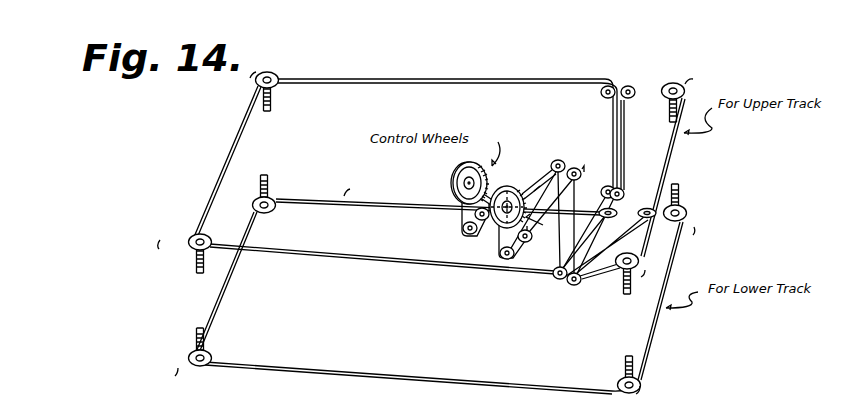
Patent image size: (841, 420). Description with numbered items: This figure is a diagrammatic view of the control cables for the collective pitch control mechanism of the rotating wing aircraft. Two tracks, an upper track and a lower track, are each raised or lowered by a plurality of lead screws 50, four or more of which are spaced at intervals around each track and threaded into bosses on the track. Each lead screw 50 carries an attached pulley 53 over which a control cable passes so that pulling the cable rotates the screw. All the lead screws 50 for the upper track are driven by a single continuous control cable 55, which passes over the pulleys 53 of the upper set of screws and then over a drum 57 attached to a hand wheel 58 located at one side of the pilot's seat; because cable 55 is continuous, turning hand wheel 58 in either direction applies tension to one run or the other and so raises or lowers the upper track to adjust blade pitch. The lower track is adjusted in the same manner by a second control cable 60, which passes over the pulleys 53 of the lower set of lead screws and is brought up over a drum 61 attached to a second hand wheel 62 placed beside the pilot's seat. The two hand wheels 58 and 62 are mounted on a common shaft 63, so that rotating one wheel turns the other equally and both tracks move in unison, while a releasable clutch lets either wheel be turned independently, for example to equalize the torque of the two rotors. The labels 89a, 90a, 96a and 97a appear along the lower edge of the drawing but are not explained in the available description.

The lead screw 50 is at (274, 104).
The pulley 53 is at (439, 225).
The control cable 55 is at (576, 78).
The drum 57 is at (530, 176).
The hand wheel 58 is at (560, 160).
The second control cable 60 is at (458, 379).
The drum 61 is at (464, 216).
The second hand wheel 62 is at (456, 180).
The common shaft 63 is at (496, 193).
The rail 89a is at (506, 419).
The rail 90a is at (488, 418).
The rail 96a is at (480, 419).
The rail 97a is at (444, 418).